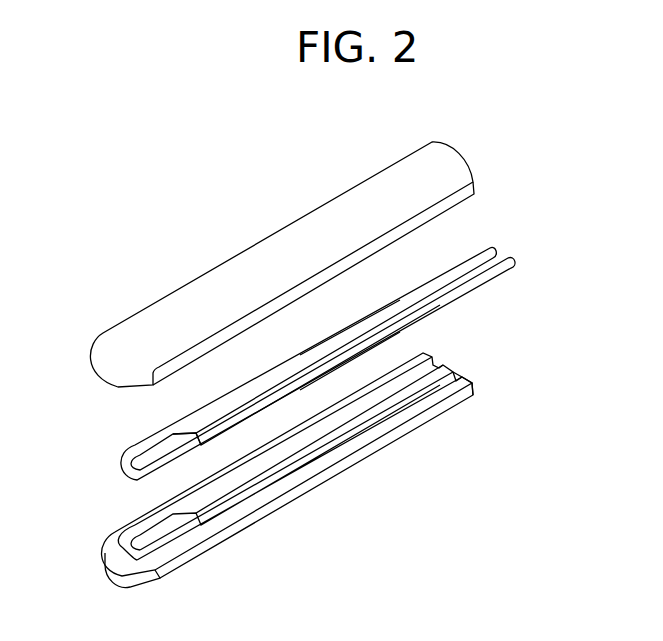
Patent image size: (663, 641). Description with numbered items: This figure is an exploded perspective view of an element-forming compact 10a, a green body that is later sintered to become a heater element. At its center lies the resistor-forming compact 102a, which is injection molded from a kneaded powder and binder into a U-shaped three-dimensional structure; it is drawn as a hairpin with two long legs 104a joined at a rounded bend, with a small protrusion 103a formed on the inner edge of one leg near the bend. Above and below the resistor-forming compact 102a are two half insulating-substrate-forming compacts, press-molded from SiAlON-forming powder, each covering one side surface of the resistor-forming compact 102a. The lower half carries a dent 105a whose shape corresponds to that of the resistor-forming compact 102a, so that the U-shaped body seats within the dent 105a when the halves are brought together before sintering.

The element-forming compact 10a is at (127, 193).
The resistor-forming compact 102a is at (125, 456).
The protrusion 103a is at (163, 437).
The leg portions 104a is at (327, 373).
The dent 105a is at (438, 385).